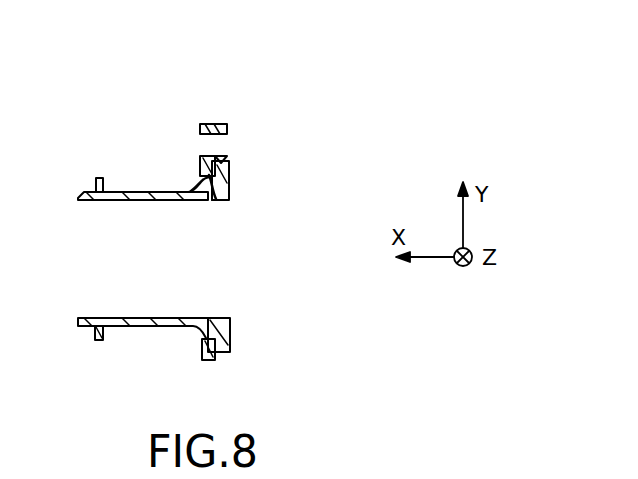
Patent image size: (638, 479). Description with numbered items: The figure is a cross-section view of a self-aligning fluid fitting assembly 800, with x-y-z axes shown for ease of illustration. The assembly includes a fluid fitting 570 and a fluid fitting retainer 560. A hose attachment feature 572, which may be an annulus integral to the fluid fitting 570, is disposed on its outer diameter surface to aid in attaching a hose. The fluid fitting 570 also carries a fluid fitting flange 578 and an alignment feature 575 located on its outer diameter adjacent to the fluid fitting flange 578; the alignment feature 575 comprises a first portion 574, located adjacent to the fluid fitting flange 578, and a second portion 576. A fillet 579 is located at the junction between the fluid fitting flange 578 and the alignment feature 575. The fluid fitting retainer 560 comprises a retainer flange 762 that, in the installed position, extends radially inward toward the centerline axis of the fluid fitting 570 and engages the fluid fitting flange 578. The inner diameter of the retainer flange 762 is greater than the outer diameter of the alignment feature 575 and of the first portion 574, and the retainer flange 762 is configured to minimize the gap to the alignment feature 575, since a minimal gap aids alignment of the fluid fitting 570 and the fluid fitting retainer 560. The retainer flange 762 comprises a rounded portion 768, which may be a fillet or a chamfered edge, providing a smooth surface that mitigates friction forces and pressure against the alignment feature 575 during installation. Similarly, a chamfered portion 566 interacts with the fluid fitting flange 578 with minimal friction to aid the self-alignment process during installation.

The self-aligning fluid fitting assembly 800 is at (330, 74).
The fluid fitting retainer 560 is at (220, 123).
The fluid fitting 570 is at (80, 192).
The hose attachment feature 572 is at (100, 178).
The retainer flange 762 is at (200, 160).
The fluid fitting flange 578 is at (229, 177).
The alignment feature 575 is at (203, 193).
The fillet 579 is at (220, 202).
The first portion 574 is at (208, 337).
The rounded portion 768 is at (226, 337).
The chamfered portion 566 is at (228, 358).
The second portion 576 is at (202, 330).